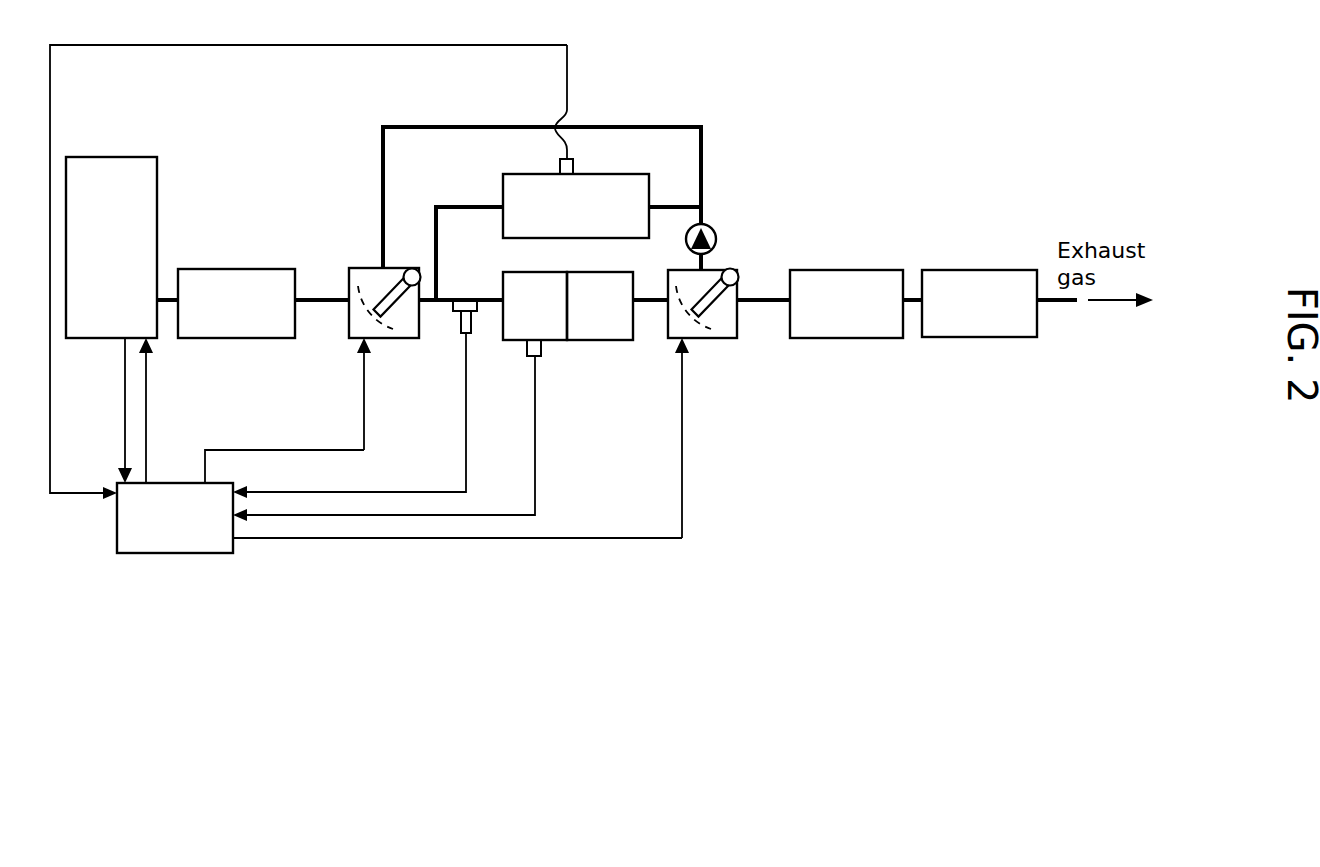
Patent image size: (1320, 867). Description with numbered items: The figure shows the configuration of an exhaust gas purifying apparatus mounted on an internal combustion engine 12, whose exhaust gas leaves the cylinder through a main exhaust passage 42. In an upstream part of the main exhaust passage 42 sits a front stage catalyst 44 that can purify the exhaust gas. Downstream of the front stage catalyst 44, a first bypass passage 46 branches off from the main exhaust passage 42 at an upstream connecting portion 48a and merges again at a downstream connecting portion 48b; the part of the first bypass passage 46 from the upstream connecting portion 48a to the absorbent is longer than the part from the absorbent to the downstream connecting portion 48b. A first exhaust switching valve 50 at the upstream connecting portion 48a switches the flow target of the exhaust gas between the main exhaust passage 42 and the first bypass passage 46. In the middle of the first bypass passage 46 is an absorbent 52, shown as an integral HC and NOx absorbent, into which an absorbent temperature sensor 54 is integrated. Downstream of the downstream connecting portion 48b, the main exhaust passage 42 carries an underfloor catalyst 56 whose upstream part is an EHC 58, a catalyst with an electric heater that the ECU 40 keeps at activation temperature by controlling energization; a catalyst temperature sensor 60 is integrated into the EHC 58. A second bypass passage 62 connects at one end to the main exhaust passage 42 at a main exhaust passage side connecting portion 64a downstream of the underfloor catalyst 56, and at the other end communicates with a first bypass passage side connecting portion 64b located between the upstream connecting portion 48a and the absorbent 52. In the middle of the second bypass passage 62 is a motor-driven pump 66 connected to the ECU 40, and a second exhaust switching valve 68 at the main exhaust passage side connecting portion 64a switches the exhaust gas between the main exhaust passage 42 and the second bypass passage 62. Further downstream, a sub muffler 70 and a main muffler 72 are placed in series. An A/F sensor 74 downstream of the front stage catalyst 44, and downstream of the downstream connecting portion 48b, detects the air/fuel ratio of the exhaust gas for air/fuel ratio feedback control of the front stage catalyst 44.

The internal combustion engine 12 is at (126, 148).
The ECU 40 is at (155, 483).
The main exhaust passage 42 is at (166, 298).
The front stage catalyst 44 is at (240, 339).
The first bypass passage 46 is at (619, 127).
The upstream connecting portion 48a is at (378, 268).
The downstream connecting portion 48b is at (441, 298).
The first exhaust switching valve 50 is at (392, 339).
The absorbent 52 is at (613, 174).
The absorbent temperature sensor 54 is at (560, 166).
The underfloor catalyst 56 is at (599, 352).
The EHC 58 is at (548, 341).
The catalyst temperature sensor 60 is at (537, 356).
The second bypass passage 62 is at (713, 228).
The main exhaust passage side connecting portion 64a is at (712, 264).
The first bypass passage side connecting portion 64b is at (688, 196).
The pump 66 is at (726, 247).
The second exhaust switching valve 68 is at (719, 339).
The sub muffler 70 is at (881, 270).
The main muffler 72 is at (981, 270).
The A/F sensor 74 is at (468, 340).